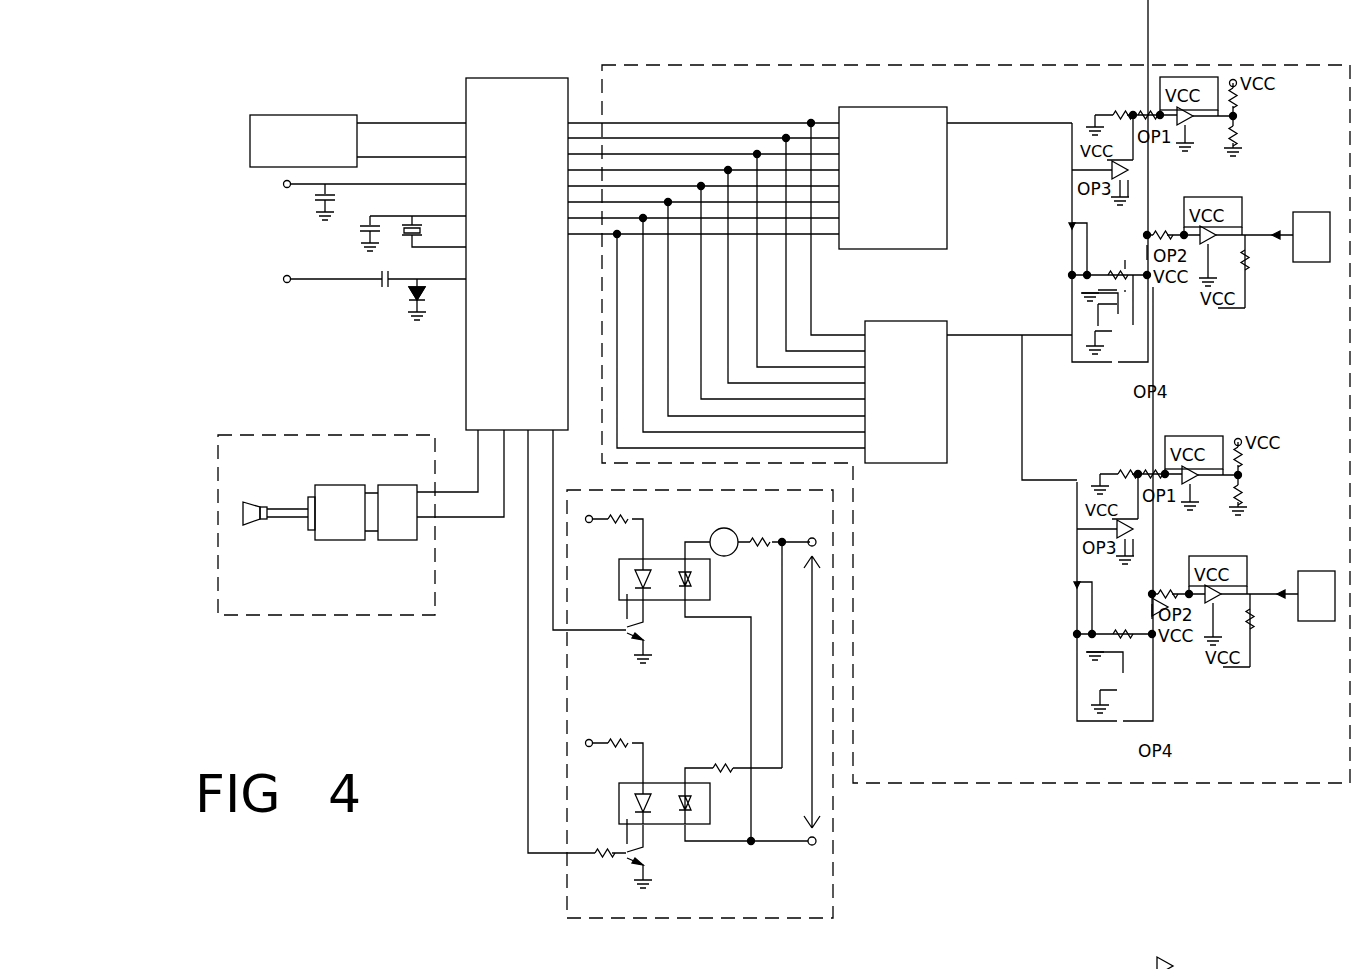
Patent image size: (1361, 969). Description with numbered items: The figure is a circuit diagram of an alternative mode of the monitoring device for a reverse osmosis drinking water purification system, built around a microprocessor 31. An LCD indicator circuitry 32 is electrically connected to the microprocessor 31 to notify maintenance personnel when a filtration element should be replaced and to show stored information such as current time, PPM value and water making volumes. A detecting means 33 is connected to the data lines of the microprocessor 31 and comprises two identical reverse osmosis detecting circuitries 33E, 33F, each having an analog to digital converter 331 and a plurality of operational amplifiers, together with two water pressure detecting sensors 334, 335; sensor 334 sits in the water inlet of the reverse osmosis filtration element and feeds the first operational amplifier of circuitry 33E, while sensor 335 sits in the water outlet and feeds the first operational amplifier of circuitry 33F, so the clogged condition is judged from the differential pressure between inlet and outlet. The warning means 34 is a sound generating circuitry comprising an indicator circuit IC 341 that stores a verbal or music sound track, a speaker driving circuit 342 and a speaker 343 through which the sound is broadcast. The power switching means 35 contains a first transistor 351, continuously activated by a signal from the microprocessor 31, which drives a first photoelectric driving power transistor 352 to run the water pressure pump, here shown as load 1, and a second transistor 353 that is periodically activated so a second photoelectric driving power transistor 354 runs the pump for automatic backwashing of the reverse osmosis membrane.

The heater load 1 is at (729, 532).
The microprocessor 31 is at (490, 362).
The LCD indicator circuitry 32 is at (340, 121).
The detecting means 33 is at (882, 785).
The analog-to-digital converter 331 is at (930, 195).
The reverse osmosis detecting circuitry 33E is at (920, 264).
The reverse osmosis detecting circuitry 33F is at (907, 482).
The water pressure detecting sensor 334 is at (1310, 262).
The water pressure detecting sensor 335 is at (1315, 621).
The warning means 34 is at (361, 487).
The indicator circuit IC 341 is at (412, 528).
The speaker driving circuit 342 is at (337, 528).
The speaker 343 is at (247, 504).
The power switching means 35 is at (724, 674).
The first transistor 351 is at (636, 650).
The first photoelectric driving power transistor 352 is at (663, 597).
The second transistor 353 is at (648, 873).
The second photoelectric driving power transistor 354 is at (660, 817).